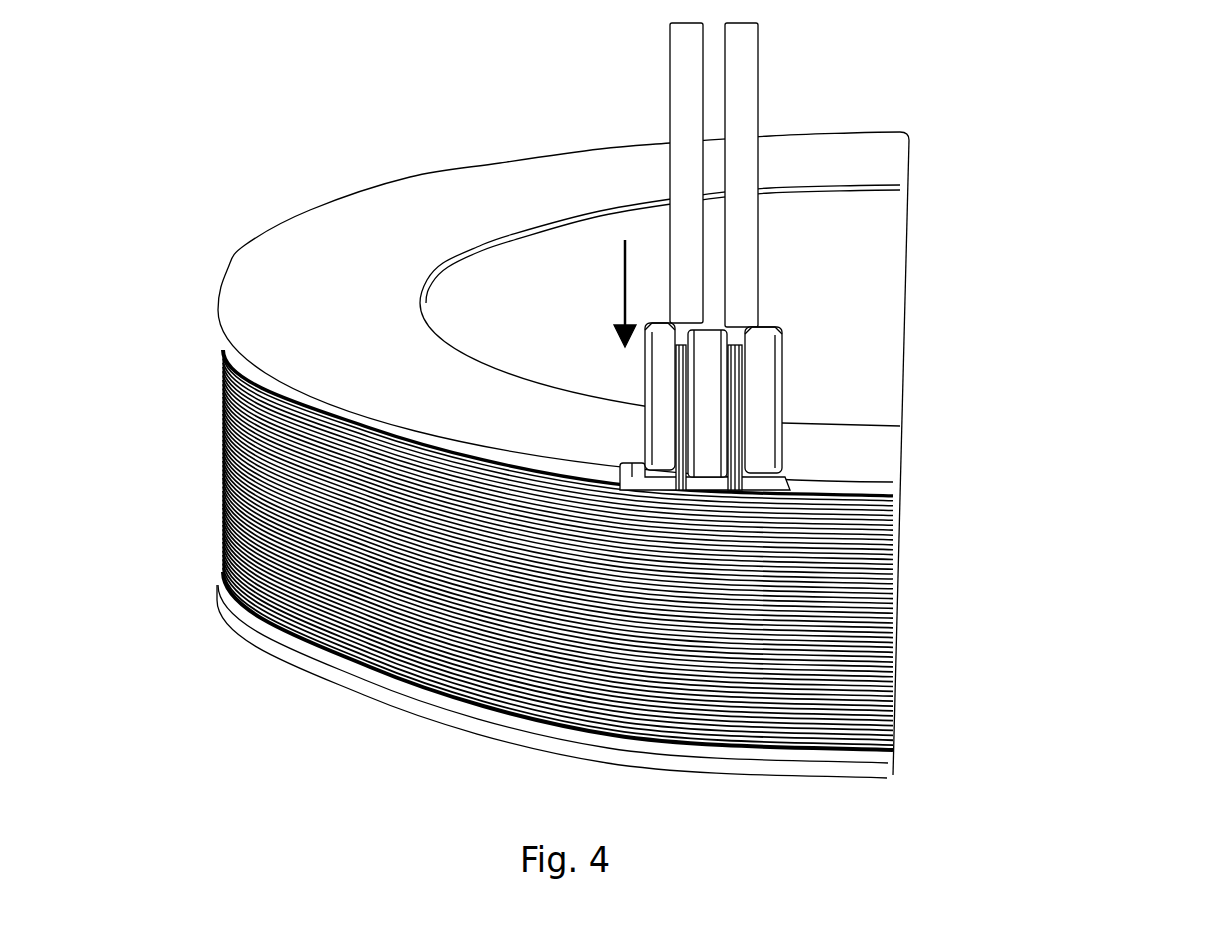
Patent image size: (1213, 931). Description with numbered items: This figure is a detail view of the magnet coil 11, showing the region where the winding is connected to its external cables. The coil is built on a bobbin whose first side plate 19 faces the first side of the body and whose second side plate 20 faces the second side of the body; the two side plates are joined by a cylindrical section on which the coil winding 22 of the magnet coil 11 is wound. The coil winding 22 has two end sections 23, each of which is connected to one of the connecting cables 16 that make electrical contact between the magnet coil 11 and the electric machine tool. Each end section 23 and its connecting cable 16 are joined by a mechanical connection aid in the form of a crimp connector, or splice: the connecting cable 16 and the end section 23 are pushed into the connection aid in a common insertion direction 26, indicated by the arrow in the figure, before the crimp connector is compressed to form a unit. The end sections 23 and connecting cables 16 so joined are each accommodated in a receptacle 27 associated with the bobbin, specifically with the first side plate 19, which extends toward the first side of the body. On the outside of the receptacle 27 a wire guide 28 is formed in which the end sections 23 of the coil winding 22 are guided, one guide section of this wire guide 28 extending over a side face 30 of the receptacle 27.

The magnet coil 11 is at (674, 550).
The coil winding 22 is at (847, 643).
The connecting cables 16 is at (685, 202).
The first side plate 19 is at (355, 297).
The second side plate 20 is at (232, 624).
The end sections 23 is at (670, 385).
The insertion direction 26 is at (622, 291).
The receptacle 27 is at (748, 380).
The wire guide 28 is at (773, 322).
The side face 30 is at (695, 417).